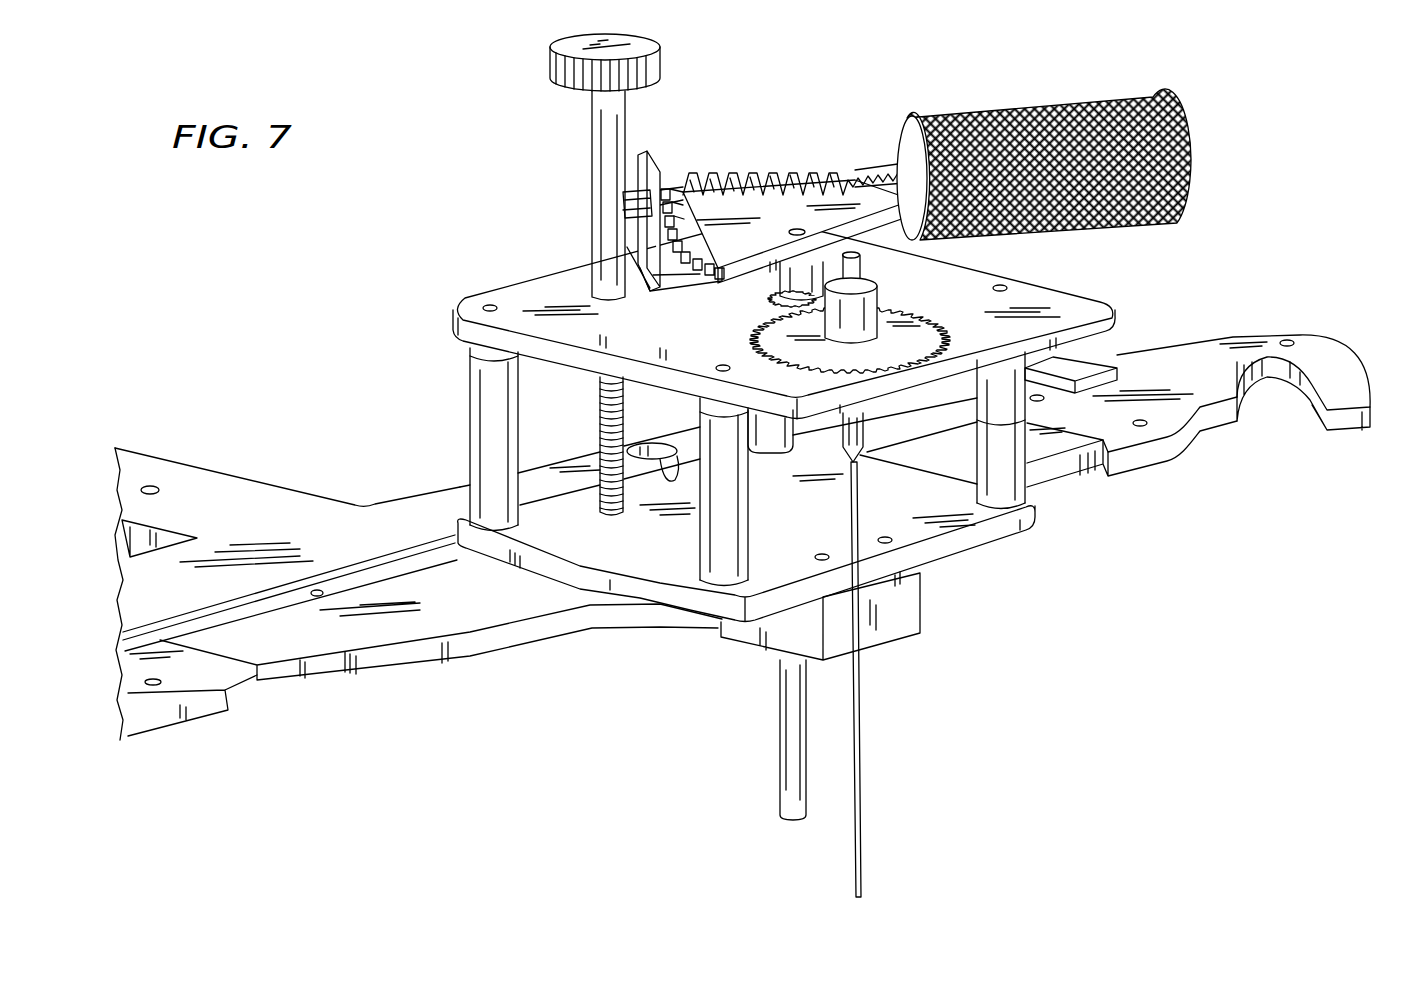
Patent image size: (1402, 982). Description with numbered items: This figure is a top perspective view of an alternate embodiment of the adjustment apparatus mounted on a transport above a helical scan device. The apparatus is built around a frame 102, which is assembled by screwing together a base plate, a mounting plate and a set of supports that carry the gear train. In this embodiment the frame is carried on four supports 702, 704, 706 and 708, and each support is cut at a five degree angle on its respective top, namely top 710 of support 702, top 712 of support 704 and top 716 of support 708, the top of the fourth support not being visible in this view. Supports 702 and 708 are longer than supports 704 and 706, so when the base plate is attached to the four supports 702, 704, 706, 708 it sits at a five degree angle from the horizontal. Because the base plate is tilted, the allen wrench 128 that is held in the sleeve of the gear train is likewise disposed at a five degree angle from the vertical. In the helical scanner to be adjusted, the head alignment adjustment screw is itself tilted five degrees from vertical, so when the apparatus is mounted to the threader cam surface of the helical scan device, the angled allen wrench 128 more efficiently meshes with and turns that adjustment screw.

The frame 102 is at (1118, 318).
The support 702 is at (713, 540).
The support 704 is at (1015, 482).
The support 706 is at (773, 440).
The support 708 is at (485, 437).
The top 710 is at (717, 410).
The top 712 is at (997, 408).
The top 716 is at (471, 348).
The allen wrench 128 is at (862, 760).